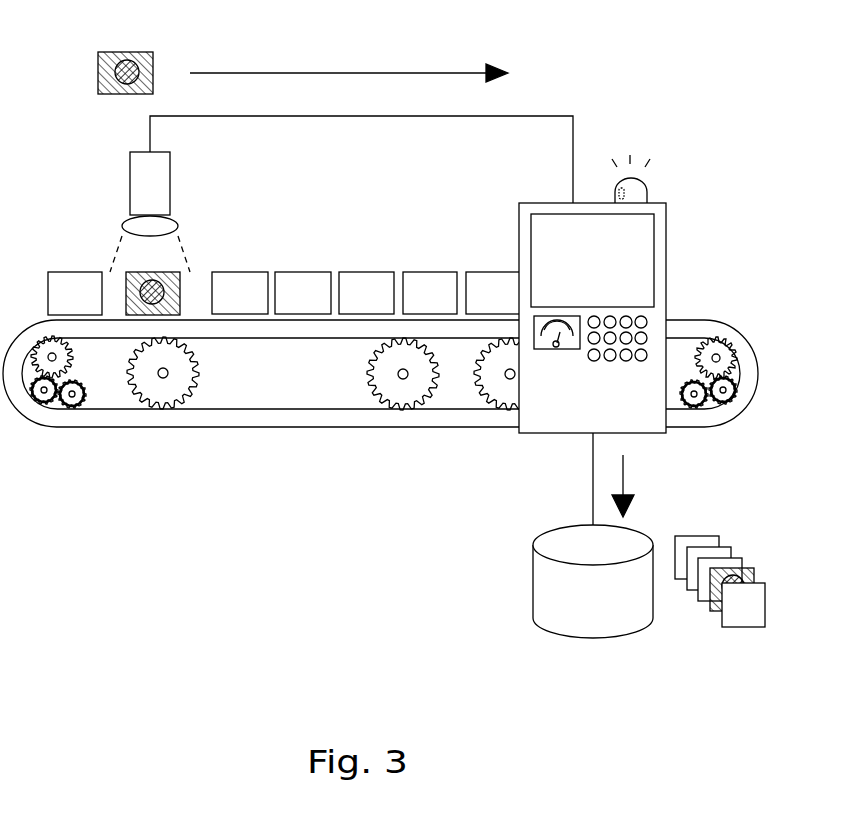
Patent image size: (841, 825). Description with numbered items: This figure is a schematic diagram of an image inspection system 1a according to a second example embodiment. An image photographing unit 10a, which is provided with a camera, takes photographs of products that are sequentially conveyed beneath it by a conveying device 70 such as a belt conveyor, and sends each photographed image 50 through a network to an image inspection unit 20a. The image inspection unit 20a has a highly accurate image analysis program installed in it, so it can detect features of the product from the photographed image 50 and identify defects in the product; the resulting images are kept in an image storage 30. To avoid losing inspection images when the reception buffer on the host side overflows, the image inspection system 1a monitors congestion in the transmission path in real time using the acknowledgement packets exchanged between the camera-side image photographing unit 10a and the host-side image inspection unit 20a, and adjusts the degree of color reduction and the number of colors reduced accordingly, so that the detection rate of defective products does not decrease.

The image inspection system 1a is at (315, 604).
The image 50 is at (148, 50).
The image photographing unit 10a is at (130, 172).
The image inspection unit 20a is at (668, 218).
The conveying device 70 is at (102, 420).
The image storage 30 is at (532, 583).